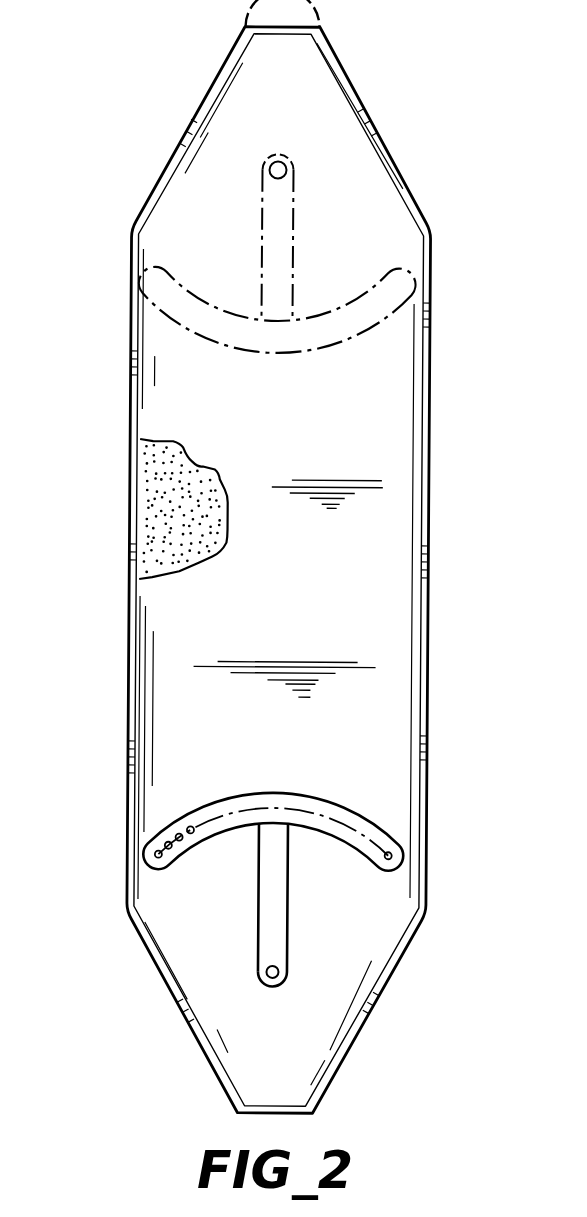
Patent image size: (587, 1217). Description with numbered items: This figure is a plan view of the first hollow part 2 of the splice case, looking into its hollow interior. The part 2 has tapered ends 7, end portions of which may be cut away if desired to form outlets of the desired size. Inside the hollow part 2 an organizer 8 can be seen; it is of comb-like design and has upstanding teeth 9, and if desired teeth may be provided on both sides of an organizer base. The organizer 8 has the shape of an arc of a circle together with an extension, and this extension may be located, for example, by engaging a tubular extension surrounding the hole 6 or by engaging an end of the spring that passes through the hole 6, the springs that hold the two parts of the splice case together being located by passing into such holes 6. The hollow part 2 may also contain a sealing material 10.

The first hollow part 2 is at (428, 547).
The hole 6 is at (257, 973).
The tapered end 7 is at (343, 950).
The organizer 8 is at (370, 820).
The upstanding teeth 9 is at (165, 832).
The sealing material 10 is at (175, 518).